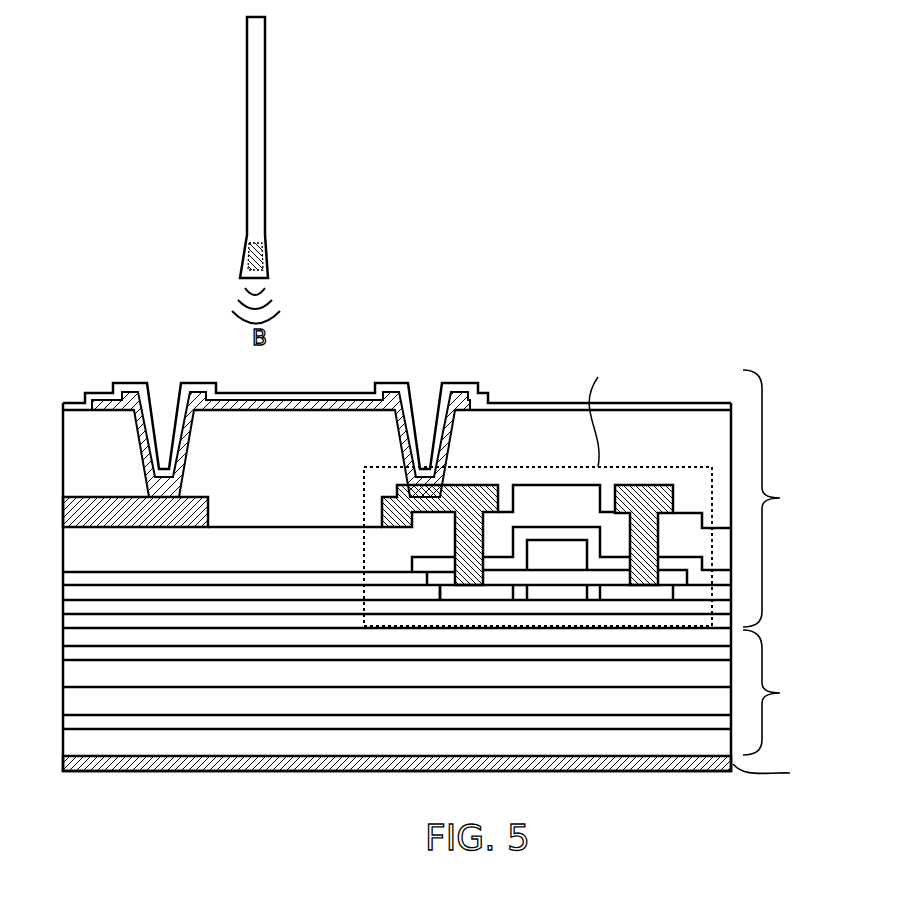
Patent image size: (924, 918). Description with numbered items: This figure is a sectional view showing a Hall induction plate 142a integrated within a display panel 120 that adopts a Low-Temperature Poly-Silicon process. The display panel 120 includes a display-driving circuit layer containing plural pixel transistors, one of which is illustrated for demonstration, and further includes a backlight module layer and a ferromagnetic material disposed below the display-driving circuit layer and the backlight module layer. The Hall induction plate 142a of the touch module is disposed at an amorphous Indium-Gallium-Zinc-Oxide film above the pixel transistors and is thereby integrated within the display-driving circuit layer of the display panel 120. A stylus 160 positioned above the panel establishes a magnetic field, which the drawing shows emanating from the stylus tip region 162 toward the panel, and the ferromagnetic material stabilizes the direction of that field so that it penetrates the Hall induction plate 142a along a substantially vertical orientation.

The stylus 160 is at (247, 180).
The laser beam emitting tip 162 is at (247, 255).
The Hall induction plate 142a is at (342, 402).
The display panel 120 is at (837, 368).